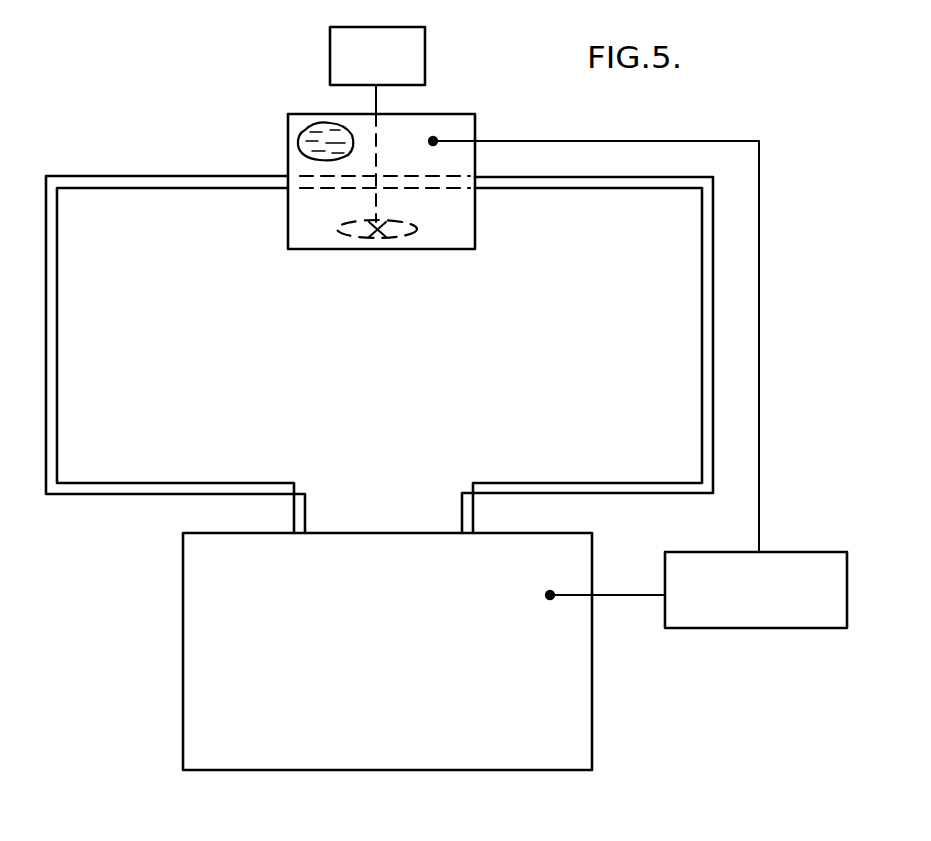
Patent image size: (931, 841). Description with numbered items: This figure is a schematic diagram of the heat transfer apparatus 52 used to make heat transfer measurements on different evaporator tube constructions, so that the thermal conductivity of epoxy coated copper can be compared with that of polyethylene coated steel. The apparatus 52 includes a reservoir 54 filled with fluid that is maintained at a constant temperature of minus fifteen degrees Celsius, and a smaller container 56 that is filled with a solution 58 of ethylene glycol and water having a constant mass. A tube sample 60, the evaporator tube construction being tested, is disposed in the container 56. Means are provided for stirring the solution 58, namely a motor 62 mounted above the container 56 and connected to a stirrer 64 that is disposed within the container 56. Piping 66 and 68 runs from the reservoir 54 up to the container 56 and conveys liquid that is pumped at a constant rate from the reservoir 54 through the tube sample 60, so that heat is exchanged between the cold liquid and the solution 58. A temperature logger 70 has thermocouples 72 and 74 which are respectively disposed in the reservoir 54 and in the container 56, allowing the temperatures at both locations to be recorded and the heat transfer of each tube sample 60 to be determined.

The heat transfer apparatus 52 is at (656, 706).
The reservoir 54 is at (183, 626).
The container 56 is at (475, 217).
The solution 58 is at (298, 131).
The tube sample 60 is at (305, 190).
The motor 62 is at (330, 47).
The stirrer 64 is at (358, 238).
The piping 66 is at (57, 350).
The piping 68 is at (702, 346).
The temperature logger 70 is at (805, 628).
The thermocouple 72 is at (558, 562).
The thermocouple 74 is at (433, 138).